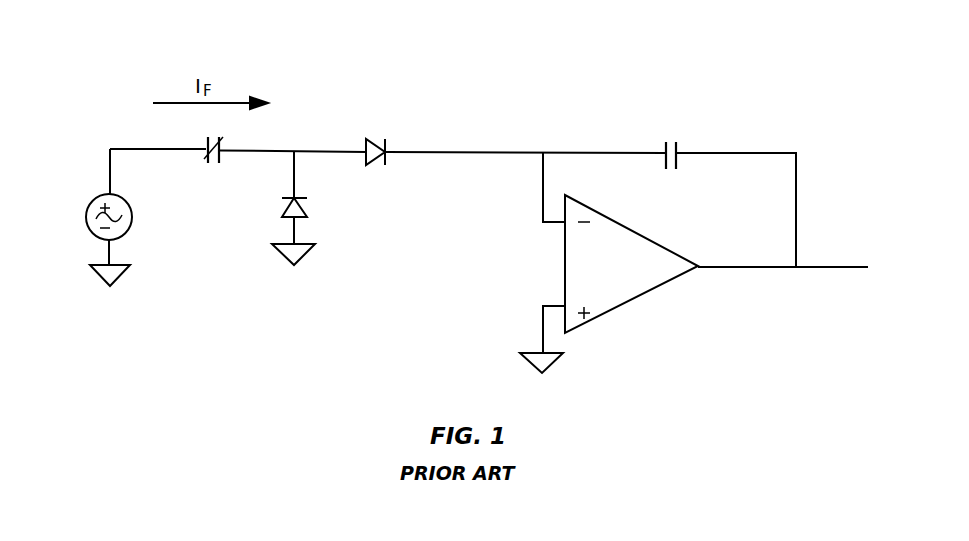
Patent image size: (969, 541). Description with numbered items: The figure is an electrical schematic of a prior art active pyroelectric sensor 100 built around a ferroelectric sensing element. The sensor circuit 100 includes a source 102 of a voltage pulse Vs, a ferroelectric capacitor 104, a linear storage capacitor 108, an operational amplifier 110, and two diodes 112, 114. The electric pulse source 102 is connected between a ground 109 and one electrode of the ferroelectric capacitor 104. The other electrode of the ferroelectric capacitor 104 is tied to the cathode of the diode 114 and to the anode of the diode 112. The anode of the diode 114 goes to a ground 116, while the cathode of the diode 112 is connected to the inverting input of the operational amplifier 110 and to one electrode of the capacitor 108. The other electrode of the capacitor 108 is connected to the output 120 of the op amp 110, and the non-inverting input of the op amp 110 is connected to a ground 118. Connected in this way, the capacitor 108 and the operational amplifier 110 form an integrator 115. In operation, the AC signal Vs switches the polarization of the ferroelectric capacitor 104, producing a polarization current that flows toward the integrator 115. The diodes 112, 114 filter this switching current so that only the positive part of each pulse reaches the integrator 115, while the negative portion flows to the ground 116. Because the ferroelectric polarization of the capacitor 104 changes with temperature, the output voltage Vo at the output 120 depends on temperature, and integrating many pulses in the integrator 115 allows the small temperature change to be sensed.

The active pyroelectric sensor 100 is at (797, 41).
The source of a voltage pulse 102 is at (90, 235).
The ferroelectric capacitor 104 is at (220, 158).
The linear storage capacitor 108 is at (680, 147).
The ground 109 is at (106, 284).
The operational amplifier 110 is at (628, 305).
The diode 112 is at (384, 139).
The diode 114 is at (282, 208).
The integrator 115 is at (836, 126).
The ground 116 is at (305, 256).
The ground 118 is at (555, 364).
The output 120 is at (838, 270).